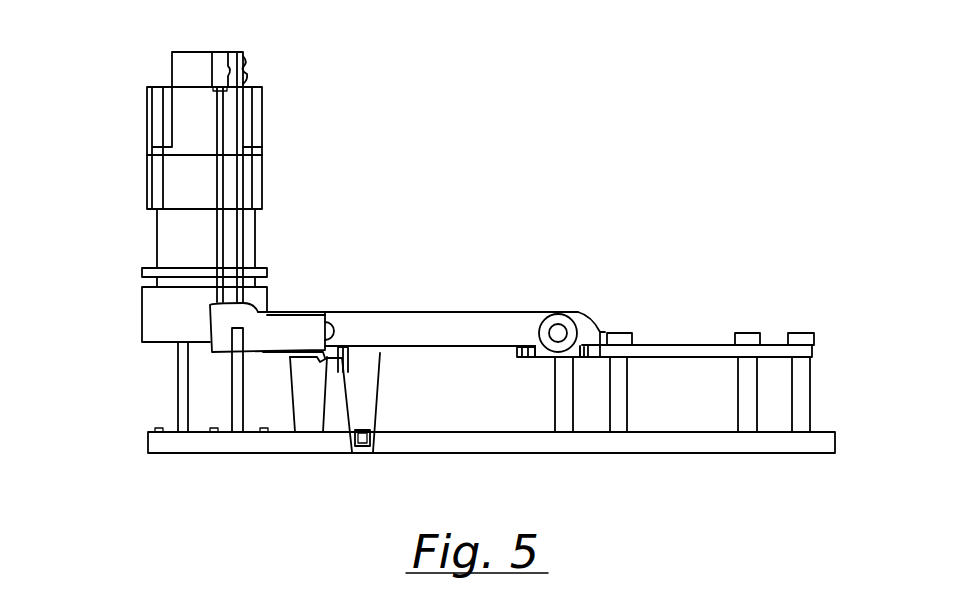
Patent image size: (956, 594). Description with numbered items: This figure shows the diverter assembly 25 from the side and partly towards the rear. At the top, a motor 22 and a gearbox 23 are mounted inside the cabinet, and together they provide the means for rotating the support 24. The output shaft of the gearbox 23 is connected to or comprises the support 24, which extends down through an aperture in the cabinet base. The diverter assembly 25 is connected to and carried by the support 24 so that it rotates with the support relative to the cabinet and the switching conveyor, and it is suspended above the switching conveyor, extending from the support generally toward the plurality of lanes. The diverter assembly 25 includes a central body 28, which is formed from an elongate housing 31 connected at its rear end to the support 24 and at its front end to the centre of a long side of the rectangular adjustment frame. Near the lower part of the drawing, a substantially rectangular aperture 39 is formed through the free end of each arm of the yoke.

The motor 22 is at (253, 122).
The gearbox 23 is at (253, 188).
The support 24 is at (245, 282).
The diverter assembly 25 is at (163, 315).
The central body 28 is at (532, 307).
The elongate housing 31 is at (420, 323).
The rectangular aperture 39 is at (348, 440).